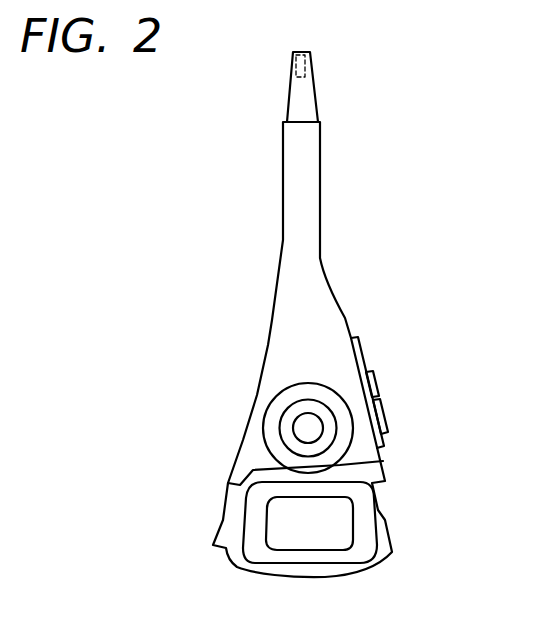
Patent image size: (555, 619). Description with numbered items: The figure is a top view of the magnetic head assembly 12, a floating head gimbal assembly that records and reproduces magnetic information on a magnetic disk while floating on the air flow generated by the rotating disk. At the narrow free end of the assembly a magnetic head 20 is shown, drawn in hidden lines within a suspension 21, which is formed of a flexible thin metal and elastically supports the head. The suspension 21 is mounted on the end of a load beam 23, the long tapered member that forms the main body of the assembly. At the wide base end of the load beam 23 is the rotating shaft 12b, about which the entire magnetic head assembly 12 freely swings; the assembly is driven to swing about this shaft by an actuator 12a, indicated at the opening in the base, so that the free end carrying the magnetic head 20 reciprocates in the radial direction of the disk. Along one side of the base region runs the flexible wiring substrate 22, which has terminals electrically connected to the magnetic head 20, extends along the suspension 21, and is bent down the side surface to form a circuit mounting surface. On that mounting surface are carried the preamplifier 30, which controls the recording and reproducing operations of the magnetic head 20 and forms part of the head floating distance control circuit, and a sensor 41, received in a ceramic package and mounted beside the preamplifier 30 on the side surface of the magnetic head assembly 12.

The magnetic head assembly 12 is at (381, 146).
The actuator 12a is at (263, 519).
The rotating shaft 12b is at (305, 427).
The magnetic head 20 is at (307, 70).
The suspension 21 is at (290, 108).
The flexible wiring substrate 22 is at (359, 348).
The load beam 23 is at (293, 215).
The preamplifier 30 is at (388, 417).
The sensor 41 is at (376, 385).